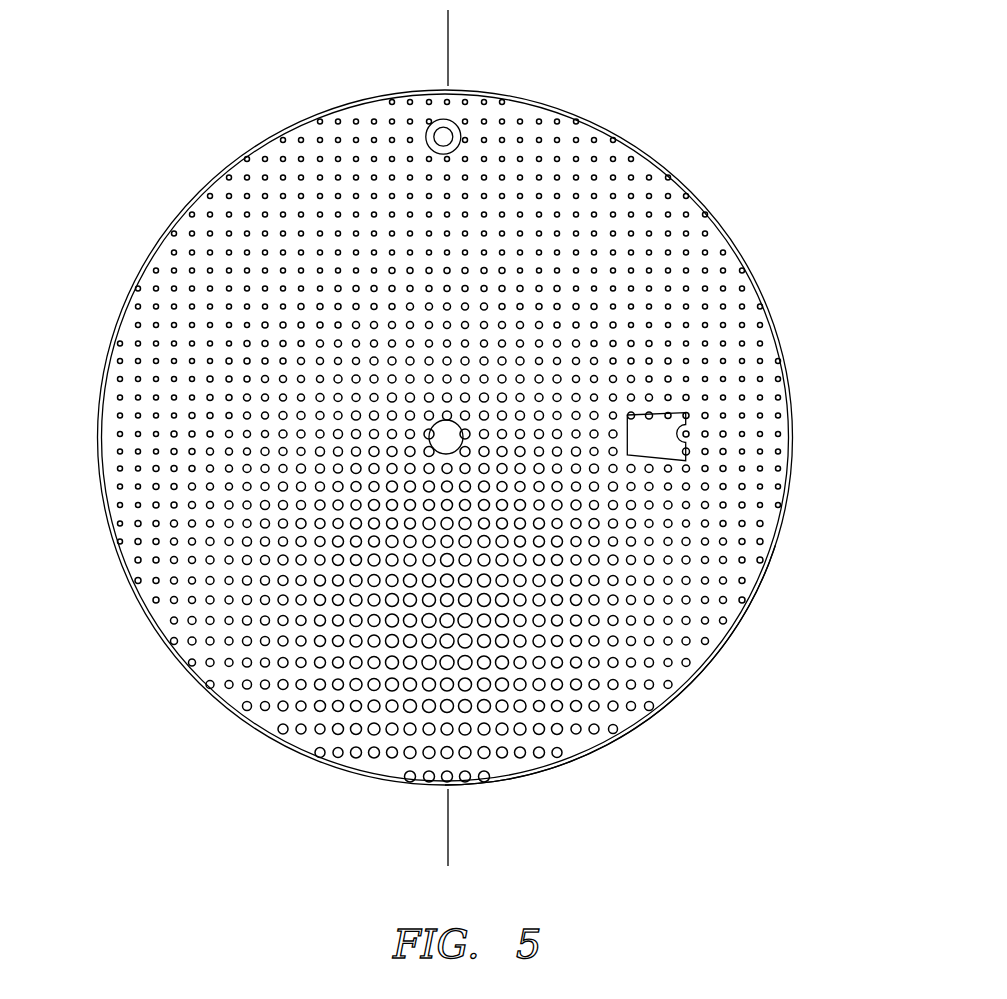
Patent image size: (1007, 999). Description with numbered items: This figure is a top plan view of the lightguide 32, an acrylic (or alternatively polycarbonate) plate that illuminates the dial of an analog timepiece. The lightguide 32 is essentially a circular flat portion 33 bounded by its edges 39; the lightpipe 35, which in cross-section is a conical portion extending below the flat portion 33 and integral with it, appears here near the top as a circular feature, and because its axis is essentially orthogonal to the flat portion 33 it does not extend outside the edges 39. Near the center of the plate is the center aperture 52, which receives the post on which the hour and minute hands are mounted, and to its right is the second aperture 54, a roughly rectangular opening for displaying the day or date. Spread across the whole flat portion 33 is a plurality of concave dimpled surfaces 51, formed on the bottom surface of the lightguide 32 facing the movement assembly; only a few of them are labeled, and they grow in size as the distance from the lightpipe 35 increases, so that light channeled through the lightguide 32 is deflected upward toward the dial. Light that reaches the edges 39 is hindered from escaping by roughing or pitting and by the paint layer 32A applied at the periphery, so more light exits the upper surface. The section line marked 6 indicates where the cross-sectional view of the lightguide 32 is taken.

The lightguide 32 is at (503, 419).
The paint layer 32A is at (604, 130).
The flat portion 33 is at (690, 190).
The lightpipe 35 is at (456, 121).
The edges 39 is at (775, 546).
The concave dimpled surfaces 51 is at (228, 215).
The center aperture 52 is at (458, 428).
The second aperture 54 is at (684, 418).
The section line 6- 6 is at (447, 21).